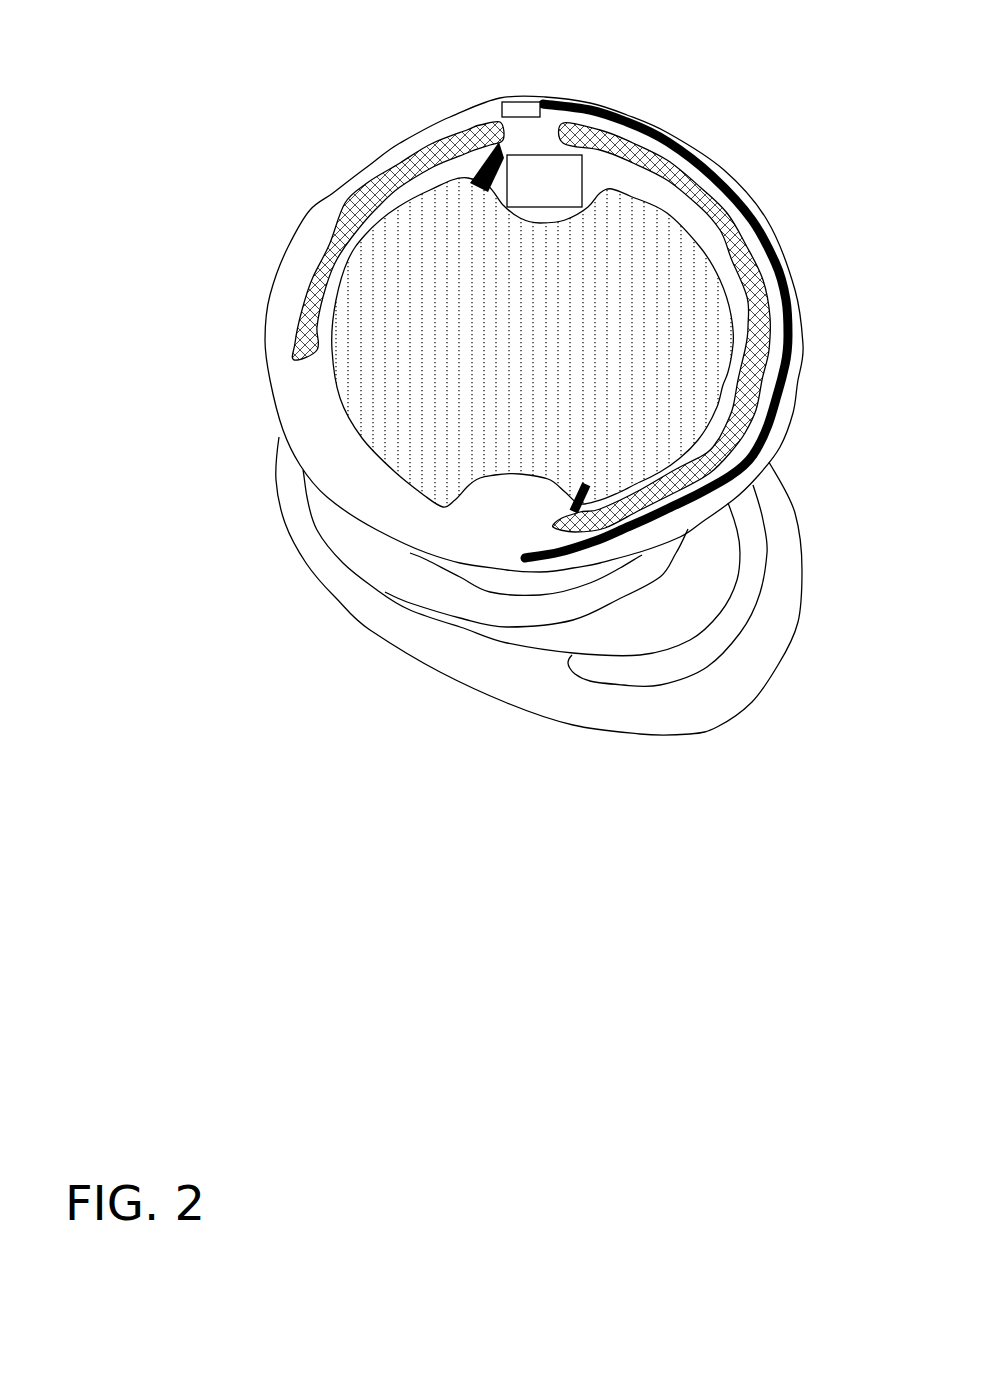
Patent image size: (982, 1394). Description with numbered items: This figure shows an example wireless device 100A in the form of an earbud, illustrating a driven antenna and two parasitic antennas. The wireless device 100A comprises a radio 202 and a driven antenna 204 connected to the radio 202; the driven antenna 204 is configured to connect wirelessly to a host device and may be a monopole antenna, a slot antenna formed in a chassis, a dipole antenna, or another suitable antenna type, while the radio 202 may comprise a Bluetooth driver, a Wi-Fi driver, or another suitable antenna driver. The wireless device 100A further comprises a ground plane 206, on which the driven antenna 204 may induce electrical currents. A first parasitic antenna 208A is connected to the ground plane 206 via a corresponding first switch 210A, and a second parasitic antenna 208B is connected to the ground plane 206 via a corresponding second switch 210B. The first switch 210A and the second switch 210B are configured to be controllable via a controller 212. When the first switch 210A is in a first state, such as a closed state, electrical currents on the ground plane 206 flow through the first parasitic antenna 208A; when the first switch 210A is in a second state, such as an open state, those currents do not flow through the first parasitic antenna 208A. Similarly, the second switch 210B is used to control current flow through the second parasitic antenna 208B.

The wireless device 100A is at (288, 92).
The radio 202 is at (517, 102).
The driven antenna 204 is at (757, 217).
The ground plane 206 is at (474, 425).
The first parasitic antenna 208A is at (747, 350).
The second parasitic antenna 208B is at (300, 283).
The first switch 210A is at (603, 474).
The second switch 210B is at (482, 176).
The controller 212 is at (568, 195).